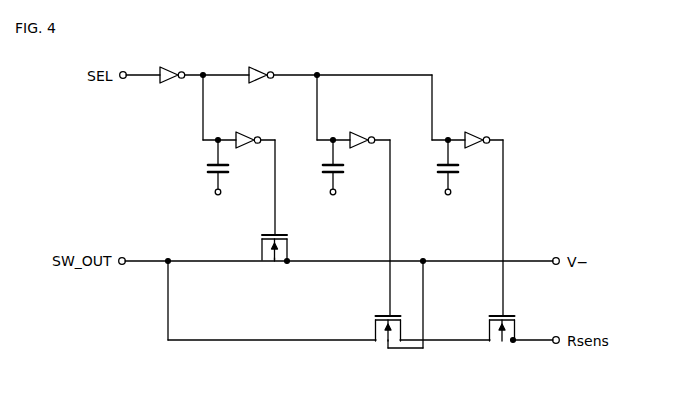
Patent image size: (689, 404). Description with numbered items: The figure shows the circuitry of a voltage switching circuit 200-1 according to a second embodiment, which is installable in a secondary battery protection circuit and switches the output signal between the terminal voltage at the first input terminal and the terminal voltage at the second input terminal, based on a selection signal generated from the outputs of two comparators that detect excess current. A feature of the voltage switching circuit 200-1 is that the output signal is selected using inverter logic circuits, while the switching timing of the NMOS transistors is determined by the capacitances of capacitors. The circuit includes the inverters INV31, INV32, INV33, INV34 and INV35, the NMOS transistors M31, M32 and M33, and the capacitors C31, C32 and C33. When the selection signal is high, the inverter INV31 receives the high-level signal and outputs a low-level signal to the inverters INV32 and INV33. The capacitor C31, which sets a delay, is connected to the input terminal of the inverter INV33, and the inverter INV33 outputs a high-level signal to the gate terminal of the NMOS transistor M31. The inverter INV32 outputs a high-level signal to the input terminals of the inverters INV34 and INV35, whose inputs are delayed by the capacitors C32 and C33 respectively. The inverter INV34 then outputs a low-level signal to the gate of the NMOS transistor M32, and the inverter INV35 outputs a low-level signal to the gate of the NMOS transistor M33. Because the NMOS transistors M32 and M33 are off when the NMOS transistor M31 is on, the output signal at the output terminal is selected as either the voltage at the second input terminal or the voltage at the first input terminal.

The inverter INV31 is at (173, 66).
The inverter INV32 is at (263, 66).
The inverter INV33 is at (251, 131).
The inverter INV34 is at (366, 131).
The inverter INV35 is at (480, 131).
The capacitor C31 is at (204, 176).
The capacitor C32 is at (318, 176).
The capacitor C33 is at (438, 178).
The NMOS transistor M31 is at (275, 257).
The NMOS transistor M32 is at (389, 344).
The NMOS transistor M33 is at (503, 342).
The voltage switching circuit 200-1 is at (527, 58).